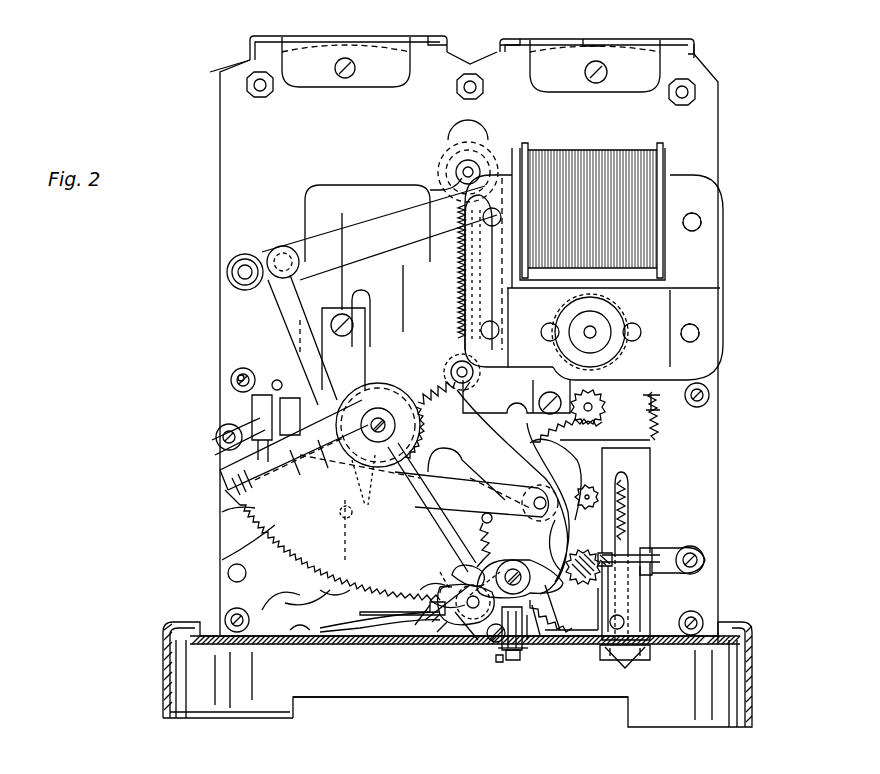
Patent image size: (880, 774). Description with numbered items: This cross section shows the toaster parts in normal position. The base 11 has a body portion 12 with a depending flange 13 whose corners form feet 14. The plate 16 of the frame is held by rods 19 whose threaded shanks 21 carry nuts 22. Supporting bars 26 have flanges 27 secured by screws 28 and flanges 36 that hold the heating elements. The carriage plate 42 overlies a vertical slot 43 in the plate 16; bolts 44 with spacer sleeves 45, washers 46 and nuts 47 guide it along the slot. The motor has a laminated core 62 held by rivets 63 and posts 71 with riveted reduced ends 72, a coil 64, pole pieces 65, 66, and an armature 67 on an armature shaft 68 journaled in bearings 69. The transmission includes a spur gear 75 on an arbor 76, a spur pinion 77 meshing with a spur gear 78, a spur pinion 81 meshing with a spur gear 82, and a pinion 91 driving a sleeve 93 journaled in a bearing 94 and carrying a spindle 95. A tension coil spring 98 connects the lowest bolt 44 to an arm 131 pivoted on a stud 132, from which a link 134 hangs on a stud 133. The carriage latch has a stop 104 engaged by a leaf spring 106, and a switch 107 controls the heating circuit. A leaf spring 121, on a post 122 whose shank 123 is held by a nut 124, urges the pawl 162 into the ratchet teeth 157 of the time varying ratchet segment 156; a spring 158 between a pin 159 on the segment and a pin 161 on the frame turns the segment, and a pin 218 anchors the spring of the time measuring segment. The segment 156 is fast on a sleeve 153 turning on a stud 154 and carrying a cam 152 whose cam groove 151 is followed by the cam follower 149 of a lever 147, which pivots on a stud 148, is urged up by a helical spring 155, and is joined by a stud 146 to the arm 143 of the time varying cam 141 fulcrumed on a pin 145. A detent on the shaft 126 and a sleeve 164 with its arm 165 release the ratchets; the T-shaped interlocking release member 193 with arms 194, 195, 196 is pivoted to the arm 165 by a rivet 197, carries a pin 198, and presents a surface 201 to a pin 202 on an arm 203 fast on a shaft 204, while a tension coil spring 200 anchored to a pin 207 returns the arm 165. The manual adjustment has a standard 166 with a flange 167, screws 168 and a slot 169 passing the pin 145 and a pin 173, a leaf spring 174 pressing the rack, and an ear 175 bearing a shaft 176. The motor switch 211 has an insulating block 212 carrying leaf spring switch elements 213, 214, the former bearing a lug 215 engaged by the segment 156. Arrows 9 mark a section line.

The direction arrow 9 is at (420, 570).
The base plate 11 is at (560, 697).
The base step 12 is at (680, 648).
The housing wall 13 is at (163, 660).
The housing bottom 14 is at (285, 716).
The mounting plate 16 is at (222, 130).
The mounting hole 19 is at (232, 372).
The screw 21 is at (262, 92).
The hex nut 22 is at (270, 88).
The mounting tab 26 is at (258, 38).
The pocket 27 is at (325, 78).
The screw 28 is at (355, 74).
The tab flange 36 is at (695, 58).
The support 42 is at (360, 188).
The cap 43 is at (460, 128).
The pivot 44 is at (462, 172).
The gear 45 is at (497, 150).
The pinion 46 is at (485, 152).
The bushing 47 is at (460, 165).
The motor housing 62 is at (712, 256).
The hole 63 is at (497, 326).
The coil 64 is at (633, 152).
The frame line 65 is at (600, 290).
The motor bracket 66 is at (640, 367).
The rotor 67 is at (626, 310).
The shaft 68 is at (596, 336).
The rotor hub 69 is at (603, 326).
The hole 71 is at (700, 218).
The hole rim 72 is at (702, 211).
The spring 75 is at (656, 414).
The gear 76 is at (606, 407).
The spring 77 is at (600, 420).
The spring anchor 78 is at (652, 441).
The lever 81 is at (555, 504).
The rack 82 is at (570, 628).
The pinion 91 is at (585, 486).
The spring 93 is at (614, 556).
The gear 94 is at (585, 552).
The rack segment 95 is at (570, 576).
The rack 98 is at (462, 246).
The bar 104 is at (360, 614).
The spring 106 is at (345, 640).
The pin 107 is at (248, 366).
The plunger 121 is at (516, 652).
The plunger tip 122 is at (512, 662).
The plate 123 is at (505, 655).
The stop 124 is at (496, 660).
The pivot 126 is at (514, 560).
The arm 131 is at (340, 226).
The pivot 132 is at (234, 262).
The pivot 133 is at (278, 250).
The lever 134 is at (278, 306).
The slot 141 is at (420, 360).
The lever 143 is at (500, 448).
The bracket 145 is at (650, 556).
The pivot 146 is at (535, 497).
The link 147 is at (463, 485).
The pivot screw 148 is at (222, 439).
The rod 149 is at (398, 492).
The gear rim 151 is at (402, 380).
The gear pitch circle 152 is at (380, 387).
The gear hub 153 is at (380, 418).
The bracket 154 is at (358, 383).
The contact arm 155 is at (225, 428).
The sector rack 156 is at (258, 524).
The hole 157 is at (265, 543).
The spring 158 is at (452, 408).
The pin 159 is at (345, 520).
The pivot 161 is at (475, 366).
The link 162 is at (532, 628).
The cam 164 is at (530, 580).
The spring 165 is at (488, 557).
The bracket 166 is at (650, 468).
The block 167 is at (640, 650).
The notch 168 is at (625, 666).
The slot 169 is at (630, 500).
The hole 173 is at (624, 624).
The guide 174 is at (636, 607).
The bushing 175 is at (698, 548).
The screw 176 is at (698, 560).
The link 193 is at (462, 645).
The link 194 is at (440, 580).
The lever 195 is at (428, 632).
The screw 196 is at (494, 642).
The lever 197 is at (452, 575).
The pivot 198 is at (470, 612).
The lever 200 is at (462, 560).
The lever 201 is at (405, 618).
The pin 202 is at (420, 620).
The spring 203 is at (400, 595).
The link 204 is at (460, 625).
The link 207 is at (487, 513).
The contact blade 211 is at (292, 492).
The lever 212 is at (292, 362).
The contact 213 is at (325, 470).
The contact 214 is at (298, 478).
The contact bar 215 is at (245, 477).
The pin 218 is at (276, 379).